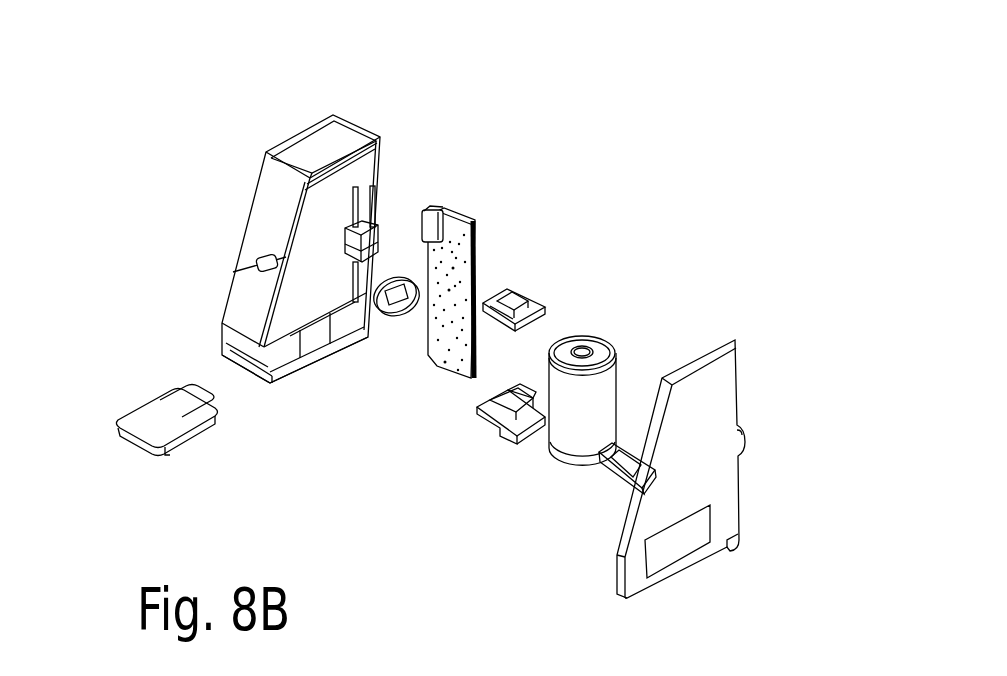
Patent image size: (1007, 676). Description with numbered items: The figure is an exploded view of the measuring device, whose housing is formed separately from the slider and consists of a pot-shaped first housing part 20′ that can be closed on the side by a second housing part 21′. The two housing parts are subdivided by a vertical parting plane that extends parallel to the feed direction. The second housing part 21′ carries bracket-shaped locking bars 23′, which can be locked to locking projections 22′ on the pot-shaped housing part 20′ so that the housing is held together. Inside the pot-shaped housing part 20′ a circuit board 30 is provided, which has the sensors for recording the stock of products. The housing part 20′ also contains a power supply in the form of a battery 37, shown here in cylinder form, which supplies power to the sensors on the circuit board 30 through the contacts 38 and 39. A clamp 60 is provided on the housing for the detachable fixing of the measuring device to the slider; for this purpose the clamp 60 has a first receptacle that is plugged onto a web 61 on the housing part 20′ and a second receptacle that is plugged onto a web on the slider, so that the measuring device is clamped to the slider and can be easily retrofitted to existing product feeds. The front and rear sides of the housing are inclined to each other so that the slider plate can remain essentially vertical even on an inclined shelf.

The first housing part 20′ is at (275, 190).
The second housing part 21′ is at (692, 458).
The locking projections 22′ is at (263, 262).
The locking bars 23′ is at (598, 468).
The circuit board 30 is at (456, 258).
The battery 37 is at (600, 385).
The contact 38 is at (505, 420).
The contact 39 is at (530, 300).
The clamp 60 is at (153, 421).
The web 61 is at (287, 366).